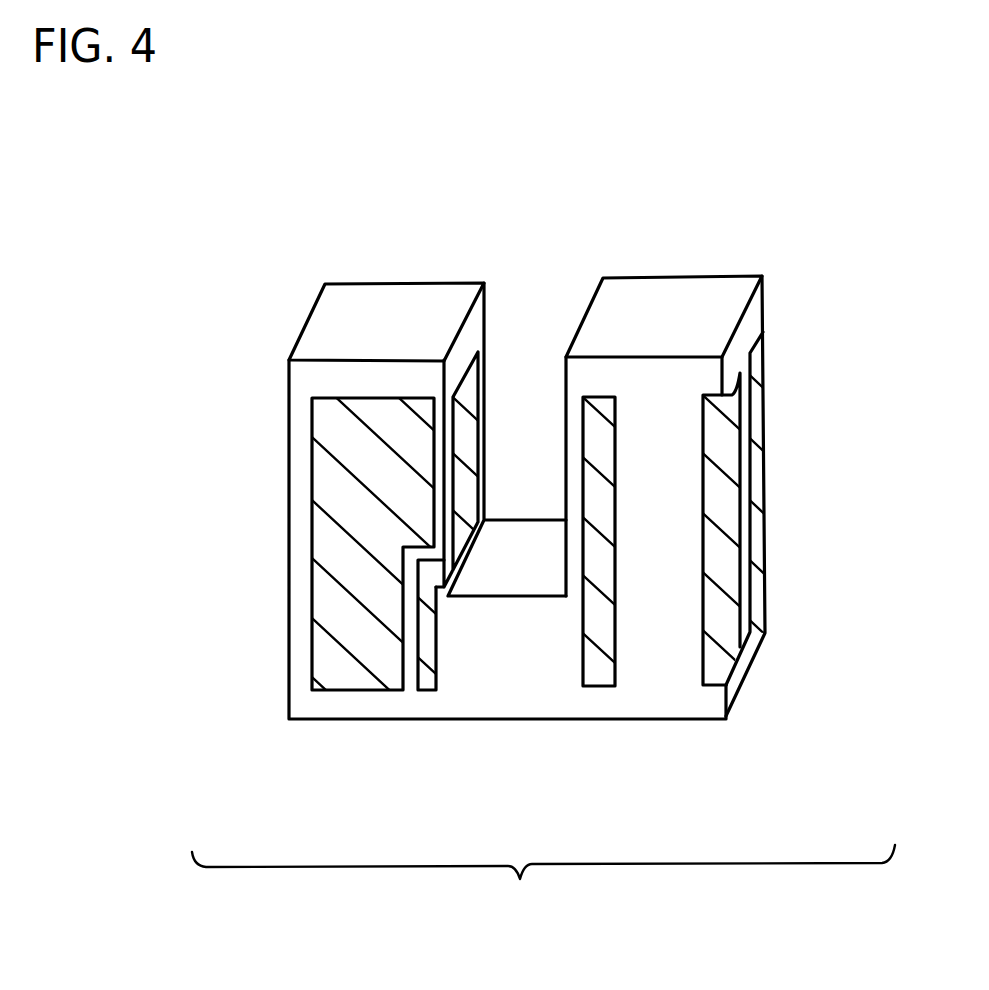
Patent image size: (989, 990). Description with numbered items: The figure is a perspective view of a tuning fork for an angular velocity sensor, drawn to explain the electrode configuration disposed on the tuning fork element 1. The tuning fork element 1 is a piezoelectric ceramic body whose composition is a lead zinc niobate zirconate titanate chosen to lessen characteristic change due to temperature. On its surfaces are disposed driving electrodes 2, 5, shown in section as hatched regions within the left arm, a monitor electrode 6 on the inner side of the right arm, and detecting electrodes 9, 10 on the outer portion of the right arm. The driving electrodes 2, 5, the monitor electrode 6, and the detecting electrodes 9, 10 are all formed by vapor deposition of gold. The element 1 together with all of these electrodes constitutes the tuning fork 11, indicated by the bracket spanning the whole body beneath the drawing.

The tuning fork element 1 is at (503, 695).
The driving electrode 2 is at (341, 690).
The driving electrode 5 is at (463, 510).
The monitor electrode 6 is at (592, 677).
The detecting electrode 9 is at (762, 594).
The detecting electrode 10 is at (716, 676).
The tuning fork 11 is at (543, 894).